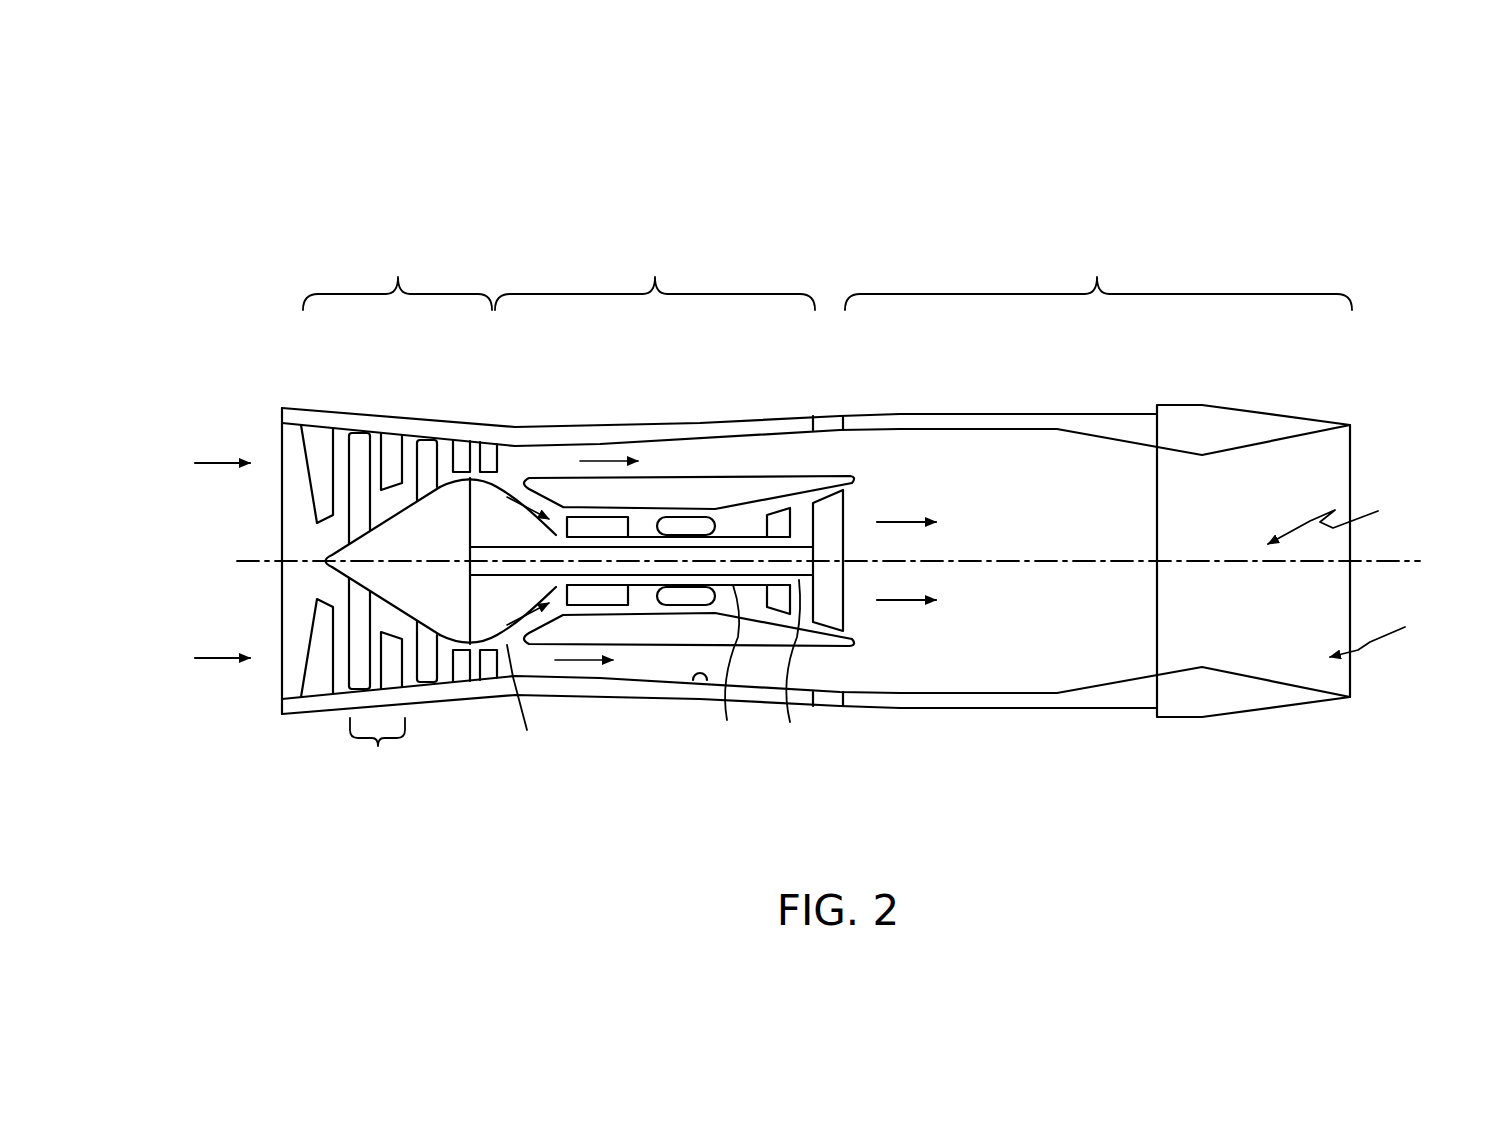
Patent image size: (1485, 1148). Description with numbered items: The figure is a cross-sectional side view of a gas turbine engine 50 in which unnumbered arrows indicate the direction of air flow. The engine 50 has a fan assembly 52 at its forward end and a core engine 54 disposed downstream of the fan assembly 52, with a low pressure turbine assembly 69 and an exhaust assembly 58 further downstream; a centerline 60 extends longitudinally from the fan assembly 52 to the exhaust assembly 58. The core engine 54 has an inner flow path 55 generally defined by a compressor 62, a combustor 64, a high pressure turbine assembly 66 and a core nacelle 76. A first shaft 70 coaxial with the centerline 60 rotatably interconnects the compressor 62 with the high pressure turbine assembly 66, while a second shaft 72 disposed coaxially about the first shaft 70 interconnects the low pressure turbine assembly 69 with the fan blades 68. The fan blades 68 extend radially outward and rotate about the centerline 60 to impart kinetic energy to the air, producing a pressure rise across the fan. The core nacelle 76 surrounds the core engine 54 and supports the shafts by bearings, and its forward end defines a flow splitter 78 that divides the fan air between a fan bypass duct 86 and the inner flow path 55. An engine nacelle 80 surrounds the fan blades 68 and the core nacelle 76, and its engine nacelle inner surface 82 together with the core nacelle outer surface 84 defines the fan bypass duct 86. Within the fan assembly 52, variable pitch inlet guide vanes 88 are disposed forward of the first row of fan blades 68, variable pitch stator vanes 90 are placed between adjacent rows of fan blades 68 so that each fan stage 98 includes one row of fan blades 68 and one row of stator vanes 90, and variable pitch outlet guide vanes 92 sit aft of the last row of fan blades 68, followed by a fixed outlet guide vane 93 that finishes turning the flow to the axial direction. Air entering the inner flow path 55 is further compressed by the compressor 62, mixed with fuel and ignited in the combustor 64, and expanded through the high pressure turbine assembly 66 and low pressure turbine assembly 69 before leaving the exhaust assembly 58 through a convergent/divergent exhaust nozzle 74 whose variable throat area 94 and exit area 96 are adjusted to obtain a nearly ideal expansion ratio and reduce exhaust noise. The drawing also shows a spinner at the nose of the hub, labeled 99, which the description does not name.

The gas turbine engine 50 is at (1183, 237).
The fan assembly 52 is at (397, 271).
The core engine 54 is at (655, 271).
The inner flow path 55 is at (524, 489).
The exhaust assembly 58 is at (1098, 269).
The centerline 60 is at (216, 553).
The compressor 62 is at (627, 517).
The combustor 64 is at (690, 515).
The high pressure turbine assembly 66 is at (783, 510).
The fan blades 68 is at (347, 675).
The low pressure turbine assembly 69 is at (843, 605).
The first shaft 70 is at (726, 670).
The second shaft 72 is at (797, 668).
The convergent/divergent exhaust nozzle 74 is at (1295, 415).
The core nacelle 76 is at (633, 637).
The flow splitter 78 is at (527, 705).
The engine nacelle 80 is at (462, 443).
The engine nacelle inner surface 82 is at (695, 682).
The core nacelle outer surface 84 is at (658, 645).
The fan bypass duct 86 is at (597, 456).
The variable pitch inlet guide vanes 88 is at (318, 428).
The variable pitch stator vanes 90 is at (393, 433).
The variable pitch outlet guide vanes 92 is at (467, 442).
The fixed outlet guide vane 93 is at (494, 675).
The variable throat area 94 is at (1346, 510).
The exit area 96 is at (1390, 626).
The fan stages 98 is at (377, 750).
The spinner 99 is at (326, 594).